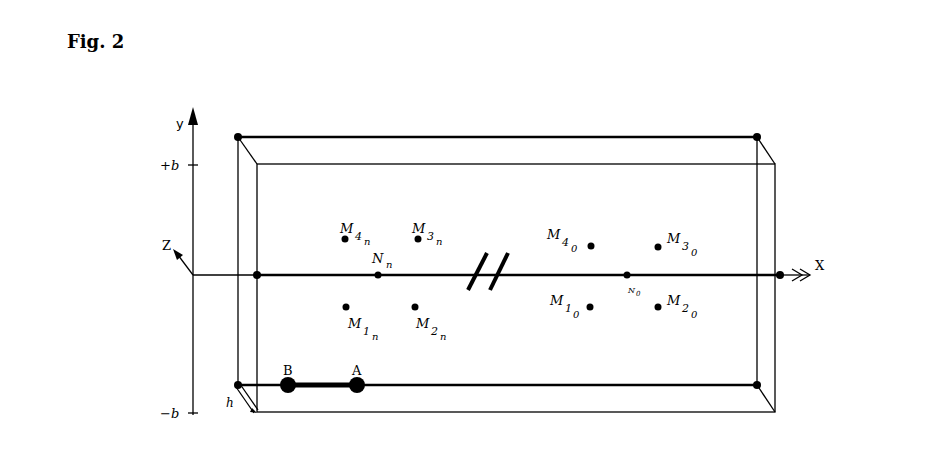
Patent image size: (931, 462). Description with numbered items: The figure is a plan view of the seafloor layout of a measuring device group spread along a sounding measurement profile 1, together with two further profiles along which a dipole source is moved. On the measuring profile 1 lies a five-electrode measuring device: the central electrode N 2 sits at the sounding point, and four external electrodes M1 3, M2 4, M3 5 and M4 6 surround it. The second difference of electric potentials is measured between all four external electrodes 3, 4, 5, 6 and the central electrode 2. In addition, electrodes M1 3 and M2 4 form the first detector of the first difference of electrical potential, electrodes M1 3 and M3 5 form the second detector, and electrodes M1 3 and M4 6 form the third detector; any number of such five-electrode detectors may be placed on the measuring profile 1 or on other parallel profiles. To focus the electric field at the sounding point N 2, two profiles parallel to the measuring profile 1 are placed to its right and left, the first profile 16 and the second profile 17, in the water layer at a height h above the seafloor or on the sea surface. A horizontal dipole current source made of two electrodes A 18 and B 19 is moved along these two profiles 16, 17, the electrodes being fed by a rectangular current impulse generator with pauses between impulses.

The measuring profile 1 is at (509, 266).
The central electrode N 2 is at (667, 189).
The electrode M1 3 is at (630, 369).
The electrode M2 4 is at (698, 369).
The electrode M3 5 is at (694, 175).
The electrode M4 6 is at (627, 174).
The first profile 16 is at (497, 409).
The second profile 17 is at (497, 118).
The electrode A 18 is at (374, 405).
The electrode B 19 is at (309, 405).